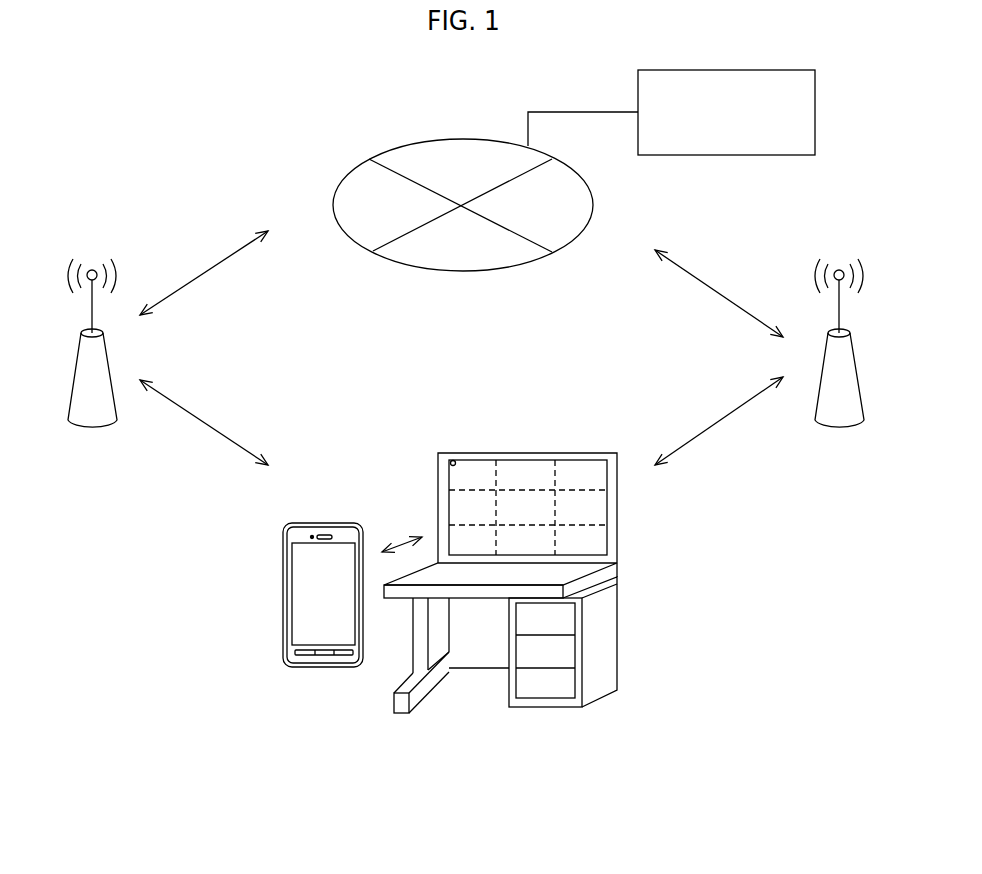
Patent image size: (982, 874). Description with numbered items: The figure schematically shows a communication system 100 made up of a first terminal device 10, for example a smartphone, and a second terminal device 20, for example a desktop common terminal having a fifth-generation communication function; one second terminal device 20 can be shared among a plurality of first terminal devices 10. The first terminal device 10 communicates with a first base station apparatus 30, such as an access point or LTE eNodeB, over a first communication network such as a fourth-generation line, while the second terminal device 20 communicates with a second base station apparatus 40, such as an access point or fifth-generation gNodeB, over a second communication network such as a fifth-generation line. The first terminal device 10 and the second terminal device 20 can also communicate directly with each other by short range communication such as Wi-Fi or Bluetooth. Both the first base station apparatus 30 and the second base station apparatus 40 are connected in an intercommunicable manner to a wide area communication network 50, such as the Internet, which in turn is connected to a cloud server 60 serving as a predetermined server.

The communication system 100 is at (94, 128).
The first terminal device 10 is at (283, 553).
The second terminal device 20 is at (567, 452).
The first base station apparatus 30 is at (74, 364).
The second base station apparatus 40 is at (857, 367).
The wide area communication network 50 is at (416, 141).
The cloud server 60 is at (816, 112).